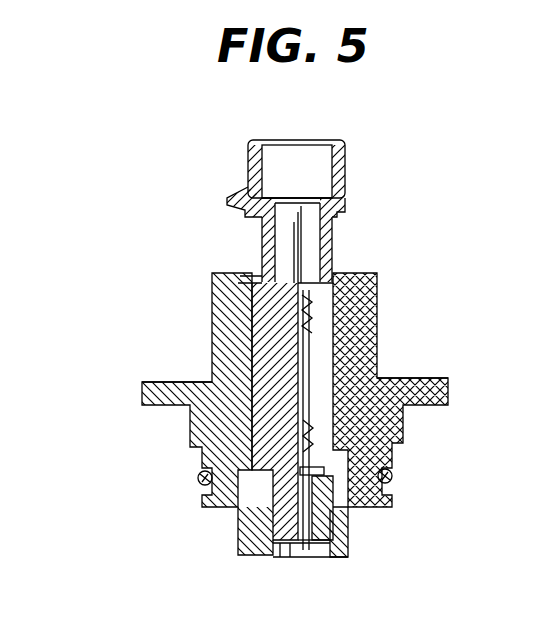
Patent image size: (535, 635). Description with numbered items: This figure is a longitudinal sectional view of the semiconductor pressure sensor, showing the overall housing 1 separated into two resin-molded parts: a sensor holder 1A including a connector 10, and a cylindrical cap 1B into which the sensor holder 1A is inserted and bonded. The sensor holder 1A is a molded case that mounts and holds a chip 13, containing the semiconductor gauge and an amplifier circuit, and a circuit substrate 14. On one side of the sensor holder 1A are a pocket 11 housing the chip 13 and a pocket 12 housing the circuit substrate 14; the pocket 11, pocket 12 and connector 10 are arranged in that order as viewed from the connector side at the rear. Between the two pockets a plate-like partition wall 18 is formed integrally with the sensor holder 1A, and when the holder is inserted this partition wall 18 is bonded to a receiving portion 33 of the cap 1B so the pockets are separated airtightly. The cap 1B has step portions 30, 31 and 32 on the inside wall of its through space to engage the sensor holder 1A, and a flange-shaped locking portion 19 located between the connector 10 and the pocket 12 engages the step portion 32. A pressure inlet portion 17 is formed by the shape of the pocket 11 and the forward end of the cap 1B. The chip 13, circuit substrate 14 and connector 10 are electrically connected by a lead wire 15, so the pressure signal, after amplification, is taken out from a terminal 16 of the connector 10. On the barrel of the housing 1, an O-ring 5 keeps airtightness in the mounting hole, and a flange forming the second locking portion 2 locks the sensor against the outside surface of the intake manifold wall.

The housing 1 is at (66, 272).
The sensor holder 1A is at (250, 292).
The cap 1B is at (214, 360).
The second locking portion 2 is at (452, 388).
The O-ring 5 is at (198, 478).
The connector 10 is at (345, 164).
The pocket 11 is at (350, 515).
The pocket 12 is at (318, 368).
The chip 13 is at (340, 505).
The circuit substrate 14 is at (345, 372).
The lead wire 15 is at (335, 293).
The terminal 16 is at (298, 238).
The pressure inlet portion 17 is at (328, 560).
The partition wall 18 is at (322, 470).
The locking portion 19 is at (258, 276).
The step portion 30 is at (262, 557).
The step portion 31 is at (242, 510).
The step portion 32 is at (248, 280).
The receiving portion 33 is at (350, 508).